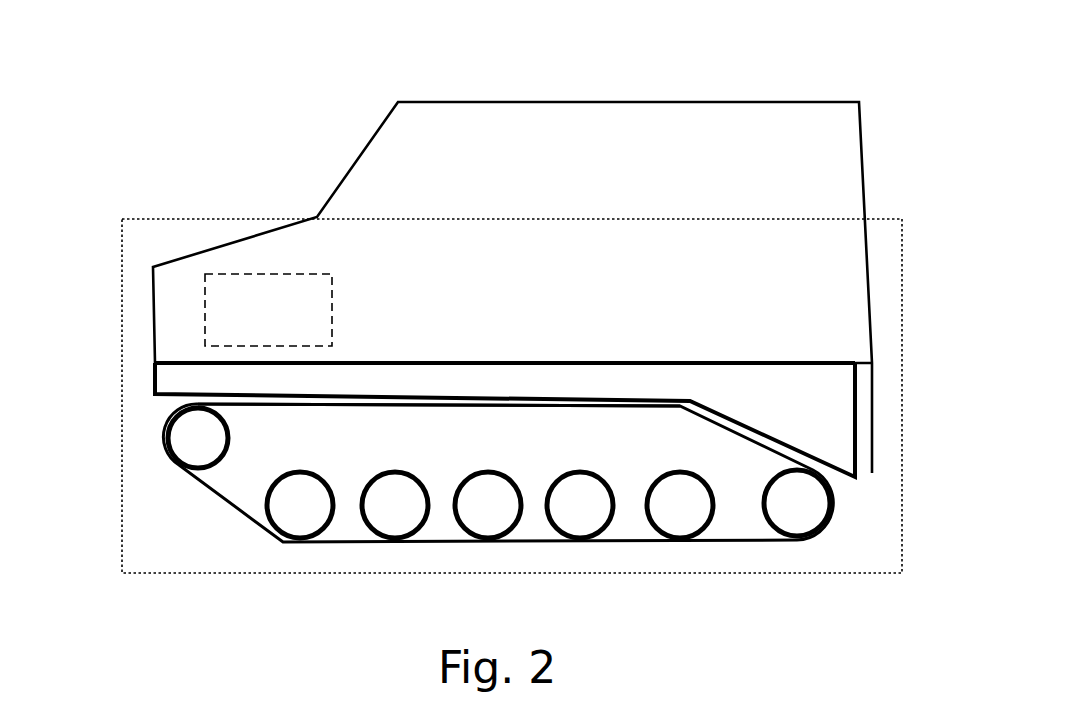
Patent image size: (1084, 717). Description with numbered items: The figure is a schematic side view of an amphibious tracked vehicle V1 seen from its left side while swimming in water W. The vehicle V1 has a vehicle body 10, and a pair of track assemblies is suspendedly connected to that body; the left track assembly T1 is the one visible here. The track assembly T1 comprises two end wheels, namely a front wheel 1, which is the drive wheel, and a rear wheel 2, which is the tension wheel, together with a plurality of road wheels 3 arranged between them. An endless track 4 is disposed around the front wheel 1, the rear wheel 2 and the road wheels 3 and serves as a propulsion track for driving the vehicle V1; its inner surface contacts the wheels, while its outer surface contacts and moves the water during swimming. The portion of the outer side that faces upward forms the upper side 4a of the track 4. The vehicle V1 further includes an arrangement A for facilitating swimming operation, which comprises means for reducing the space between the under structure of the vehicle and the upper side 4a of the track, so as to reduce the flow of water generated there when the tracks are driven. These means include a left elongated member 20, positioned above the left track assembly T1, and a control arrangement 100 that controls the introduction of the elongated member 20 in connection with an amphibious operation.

The tracked vehicle V1 is at (461, 320).
The vehicle body 10 is at (435, 97).
The left elongated member 20 is at (153, 378).
The control arrangement 100 is at (268, 310).
The arrangement for facilitating swimming operation A is at (550, 363).
The water W is at (908, 406).
The left track assembly T1 is at (449, 470).
The endless track 4 is at (244, 516).
The upper side 4a is at (380, 402).
The front wheel 1 is at (214, 473).
The road wheels 3 is at (337, 526).
The rear wheel 2 is at (759, 525).